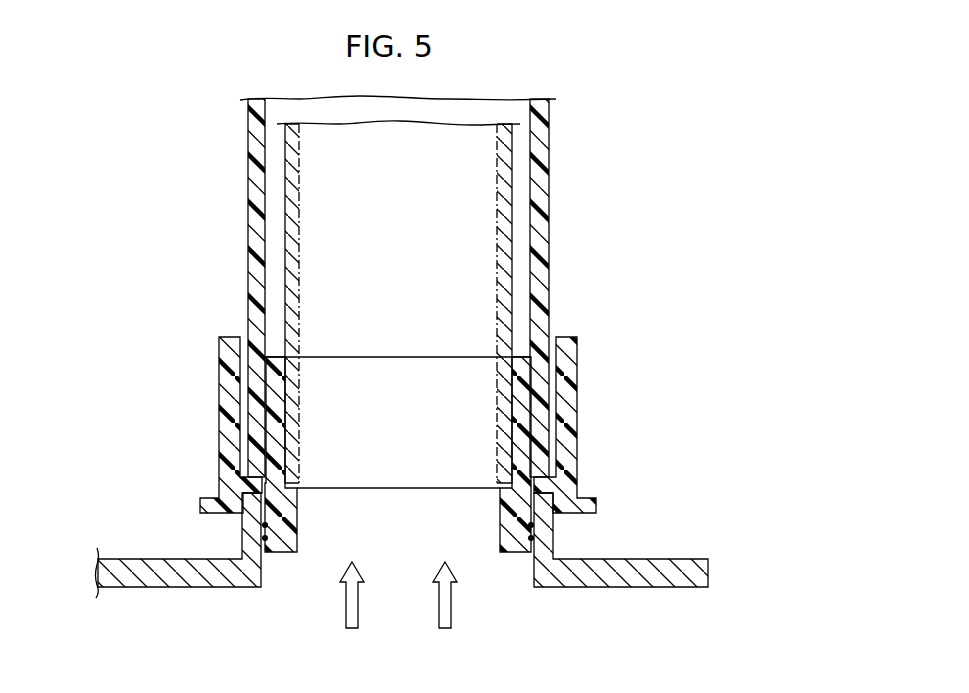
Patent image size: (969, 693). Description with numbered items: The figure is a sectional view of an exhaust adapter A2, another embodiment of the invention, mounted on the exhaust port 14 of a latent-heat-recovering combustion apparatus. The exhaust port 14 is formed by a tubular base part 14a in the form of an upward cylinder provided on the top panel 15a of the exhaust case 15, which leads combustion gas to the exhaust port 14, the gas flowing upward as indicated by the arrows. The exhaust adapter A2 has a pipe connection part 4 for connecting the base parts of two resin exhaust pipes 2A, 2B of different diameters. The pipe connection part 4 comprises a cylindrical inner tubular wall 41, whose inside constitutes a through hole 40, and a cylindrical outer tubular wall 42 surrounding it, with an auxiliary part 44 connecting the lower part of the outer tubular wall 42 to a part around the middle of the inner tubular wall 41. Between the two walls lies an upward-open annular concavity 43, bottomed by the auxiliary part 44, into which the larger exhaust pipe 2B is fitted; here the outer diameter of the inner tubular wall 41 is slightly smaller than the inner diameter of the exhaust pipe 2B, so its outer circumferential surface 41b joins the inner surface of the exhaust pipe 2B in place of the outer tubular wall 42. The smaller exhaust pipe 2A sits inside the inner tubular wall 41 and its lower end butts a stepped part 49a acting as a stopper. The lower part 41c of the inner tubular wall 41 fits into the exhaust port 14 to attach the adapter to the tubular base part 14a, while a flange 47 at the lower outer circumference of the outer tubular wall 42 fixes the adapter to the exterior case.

The exhaust pipe 2A is at (310, 187).
The exhaust pipe 2B is at (252, 153).
The pipe connection part 4 is at (230, 315).
The through hole 40 is at (405, 380).
The inner tubular wall 41 is at (285, 355).
The outer circumferential surface 41b is at (272, 416).
The lower part 41c is at (285, 543).
The outer tubular wall 42 is at (222, 357).
The annular concavity 43 is at (250, 418).
The auxiliary part 44 is at (250, 483).
The flange 47 is at (588, 507).
The stepped part 49a is at (300, 485).
The exhaust port 14 is at (390, 567).
The tubular base part 14a is at (547, 543).
The exhaust case 15 is at (123, 555).
The top panel 15a is at (167, 565).
The exhaust adapter A2 is at (577, 332).